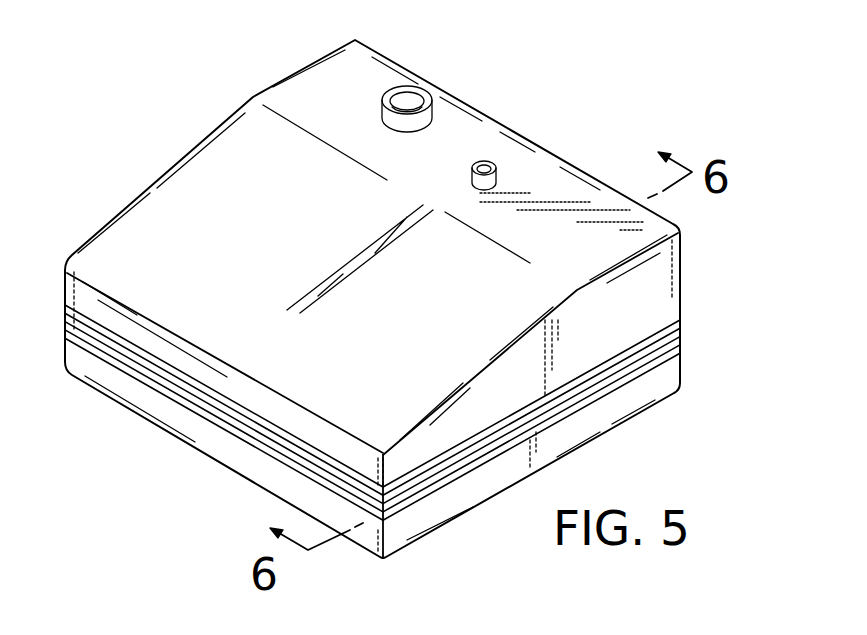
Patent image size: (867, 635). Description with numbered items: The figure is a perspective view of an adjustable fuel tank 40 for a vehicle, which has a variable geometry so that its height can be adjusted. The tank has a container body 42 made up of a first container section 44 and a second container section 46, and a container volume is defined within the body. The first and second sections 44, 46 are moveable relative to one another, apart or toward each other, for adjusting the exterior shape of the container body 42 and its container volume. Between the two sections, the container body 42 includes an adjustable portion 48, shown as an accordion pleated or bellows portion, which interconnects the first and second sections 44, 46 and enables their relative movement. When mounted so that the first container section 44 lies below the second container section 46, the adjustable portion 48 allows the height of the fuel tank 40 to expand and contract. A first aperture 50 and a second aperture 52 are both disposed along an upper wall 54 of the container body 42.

The adjustable fuel tank 40 is at (396, 300).
The container body 42 is at (640, 414).
The first container section 44 is at (478, 487).
The second container section 46 is at (650, 295).
The adjustable portion 48 is at (650, 358).
The first aperture 50 is at (410, 98).
The second aperture 52 is at (484, 166).
The upper wall 54 is at (555, 178).